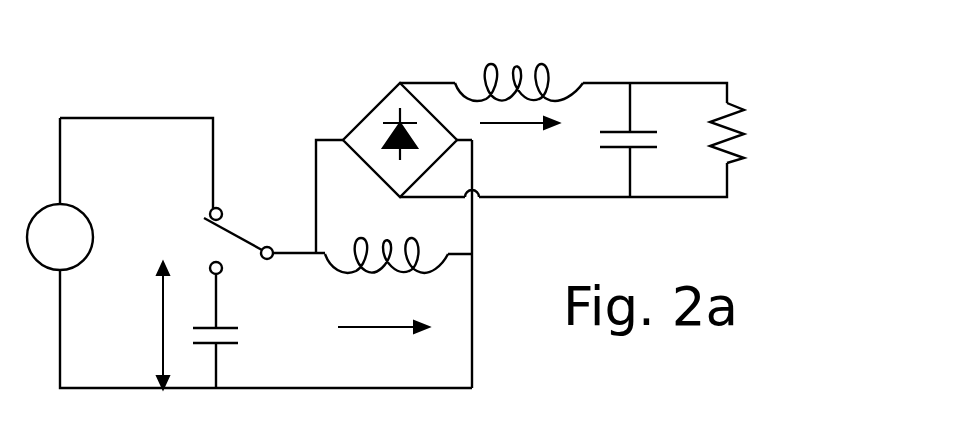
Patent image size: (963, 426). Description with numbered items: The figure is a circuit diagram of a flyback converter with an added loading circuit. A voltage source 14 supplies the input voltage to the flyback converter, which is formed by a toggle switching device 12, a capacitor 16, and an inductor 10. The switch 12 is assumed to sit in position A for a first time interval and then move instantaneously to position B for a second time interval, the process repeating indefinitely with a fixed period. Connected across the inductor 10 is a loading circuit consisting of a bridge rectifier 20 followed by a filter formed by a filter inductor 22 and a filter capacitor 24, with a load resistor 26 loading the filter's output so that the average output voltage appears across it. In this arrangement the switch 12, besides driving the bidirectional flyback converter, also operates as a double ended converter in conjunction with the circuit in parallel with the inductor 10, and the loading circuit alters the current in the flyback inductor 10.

The inductor 10 is at (424, 270).
The toggle switching device 12 is at (229, 231).
The voltage source 14 is at (59, 204).
The capacitor 16 is at (222, 330).
The bridge rectifier 20 is at (374, 109).
The filter inductor 22 is at (563, 81).
The filter capacitor 24 is at (636, 152).
The load resistor 26 is at (733, 106).